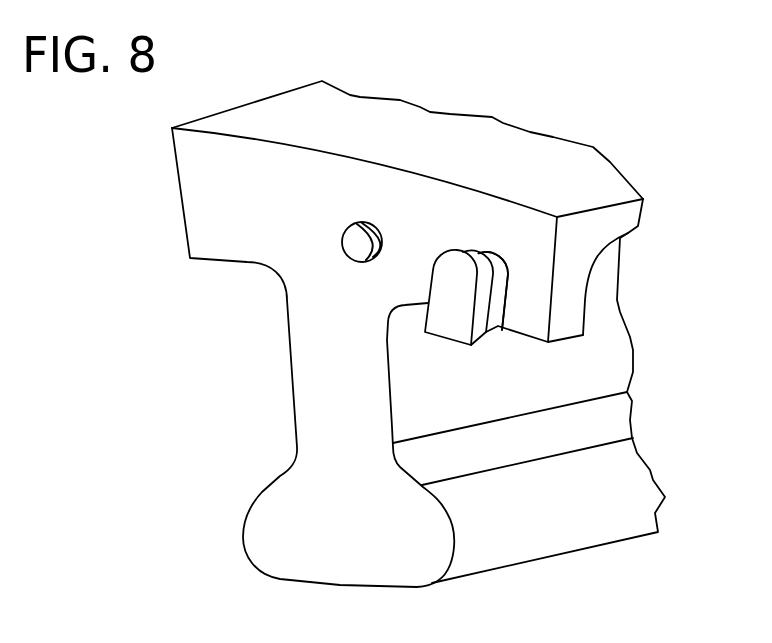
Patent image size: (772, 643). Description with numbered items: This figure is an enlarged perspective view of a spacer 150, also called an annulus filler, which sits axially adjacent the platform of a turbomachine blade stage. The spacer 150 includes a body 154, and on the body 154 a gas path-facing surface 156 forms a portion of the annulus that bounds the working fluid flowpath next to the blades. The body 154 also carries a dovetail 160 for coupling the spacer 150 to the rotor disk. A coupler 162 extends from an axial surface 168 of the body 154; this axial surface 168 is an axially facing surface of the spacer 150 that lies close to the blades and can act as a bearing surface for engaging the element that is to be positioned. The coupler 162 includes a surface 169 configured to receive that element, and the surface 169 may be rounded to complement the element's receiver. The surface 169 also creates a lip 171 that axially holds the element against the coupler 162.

The spacer 150 is at (502, 127).
The body 154 is at (585, 268).
The gas path-facing surface 156 is at (427, 122).
The dovetail 160 is at (538, 538).
The coupler 162 is at (557, 217).
The axial surface 168 is at (485, 213).
The surface 169 is at (462, 285).
The lip 171 is at (494, 291).